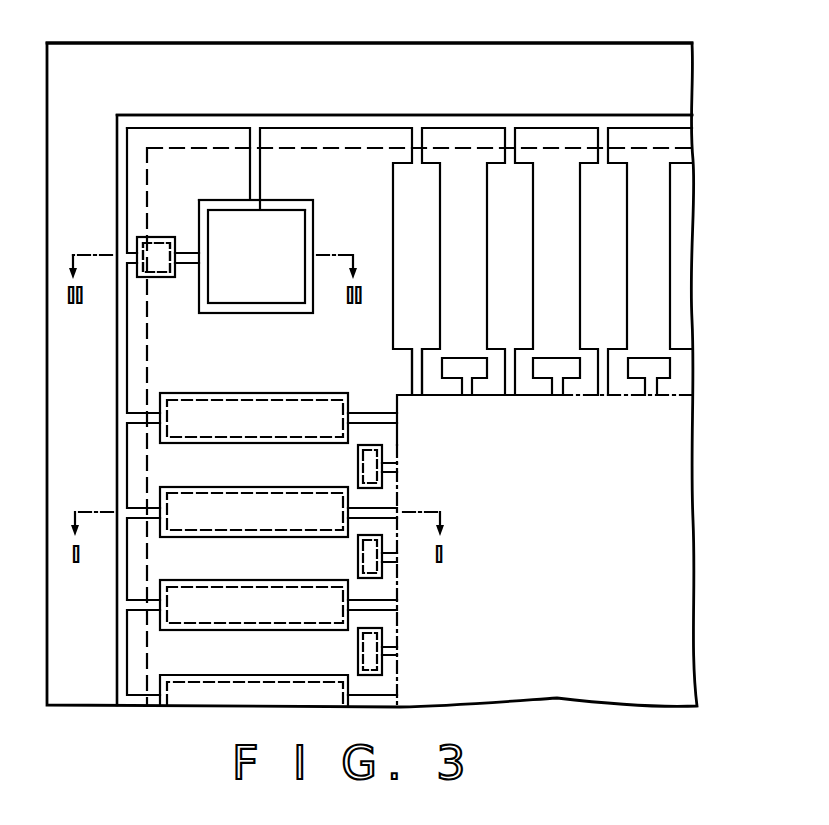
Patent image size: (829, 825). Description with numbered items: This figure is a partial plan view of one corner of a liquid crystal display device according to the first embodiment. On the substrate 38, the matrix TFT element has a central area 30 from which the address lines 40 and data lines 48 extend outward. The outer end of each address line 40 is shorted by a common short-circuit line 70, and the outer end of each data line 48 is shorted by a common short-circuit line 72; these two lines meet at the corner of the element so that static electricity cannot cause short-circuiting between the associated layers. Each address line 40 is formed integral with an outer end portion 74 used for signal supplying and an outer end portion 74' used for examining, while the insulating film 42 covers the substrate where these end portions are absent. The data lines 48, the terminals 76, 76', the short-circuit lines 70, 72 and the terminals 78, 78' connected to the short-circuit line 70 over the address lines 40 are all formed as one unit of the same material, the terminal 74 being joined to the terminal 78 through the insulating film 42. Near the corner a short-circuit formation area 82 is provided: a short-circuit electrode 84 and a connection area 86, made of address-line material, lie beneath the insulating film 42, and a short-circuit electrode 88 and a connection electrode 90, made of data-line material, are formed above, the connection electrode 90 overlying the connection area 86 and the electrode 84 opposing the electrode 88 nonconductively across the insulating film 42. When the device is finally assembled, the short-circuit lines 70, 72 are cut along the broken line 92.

The central area 30 is at (575, 542).
The substrate 38 is at (664, 34).
The address line 40 is at (382, 598).
The insulating film 42 is at (124, 60).
The data line 48 is at (507, 373).
The short-circuit line 70 is at (125, 370).
The short-circuit line 72 is at (487, 117).
The outer end portion 74 is at (278, 549).
The outer end portion 74' is at (406, 560).
The terminal 76 is at (557, 261).
The terminal 76' is at (556, 399).
The terminal 78 is at (255, 552).
The terminal 78' is at (409, 574).
The short-circuit formation area 82 is at (198, 197).
The short-circuit electrode 84 is at (280, 200).
The connection area 86 is at (158, 282).
The short-circuit electrode 88 is at (293, 230).
The connection electrode 90 is at (155, 237).
The broken line 92 is at (374, 147).